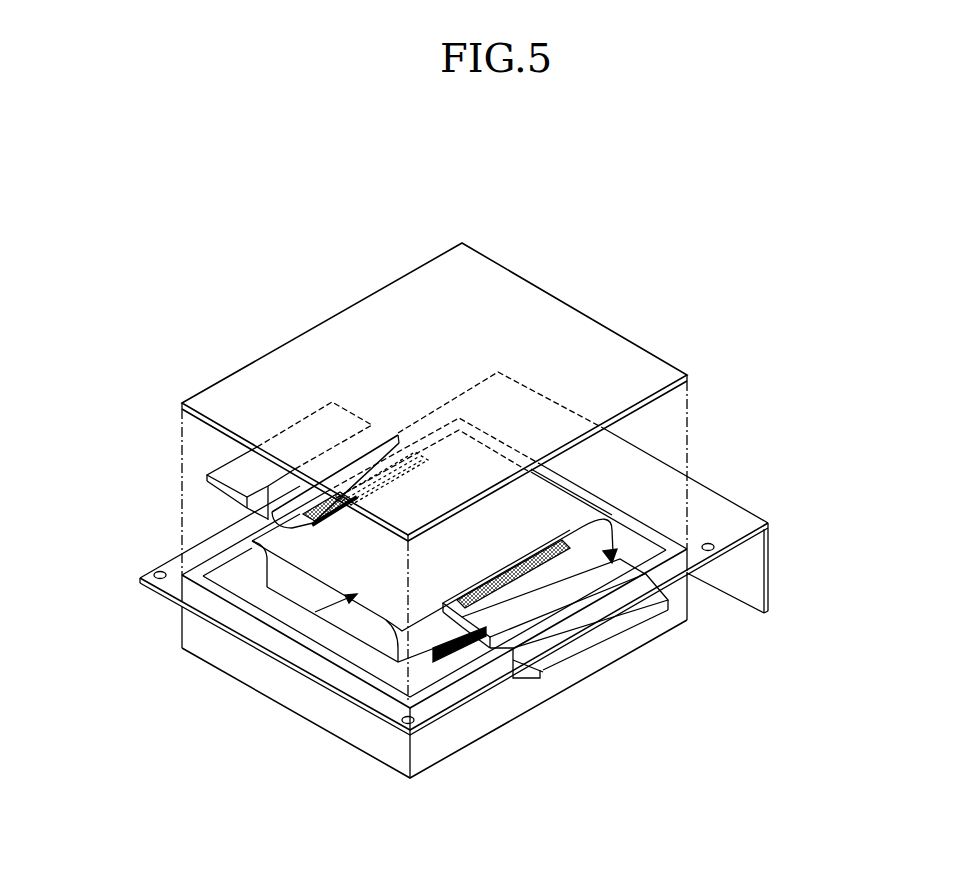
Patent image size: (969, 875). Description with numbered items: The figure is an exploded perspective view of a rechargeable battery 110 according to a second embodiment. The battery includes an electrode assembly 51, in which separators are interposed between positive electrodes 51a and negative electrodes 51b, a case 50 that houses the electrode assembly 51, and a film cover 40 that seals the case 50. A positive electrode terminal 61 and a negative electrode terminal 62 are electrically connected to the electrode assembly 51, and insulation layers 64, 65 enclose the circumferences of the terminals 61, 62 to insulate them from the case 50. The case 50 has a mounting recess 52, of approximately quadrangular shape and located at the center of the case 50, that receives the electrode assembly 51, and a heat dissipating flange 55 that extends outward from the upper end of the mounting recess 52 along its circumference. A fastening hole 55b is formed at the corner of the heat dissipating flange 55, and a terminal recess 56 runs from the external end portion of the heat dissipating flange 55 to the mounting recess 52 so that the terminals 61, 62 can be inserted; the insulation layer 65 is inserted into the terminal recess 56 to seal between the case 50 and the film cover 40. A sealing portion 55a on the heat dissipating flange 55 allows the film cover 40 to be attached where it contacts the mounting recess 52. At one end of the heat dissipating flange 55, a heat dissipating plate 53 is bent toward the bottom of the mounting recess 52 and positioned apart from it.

The rechargeable battery 110 is at (383, 216).
The film cover 40 is at (492, 290).
The case 50 is at (476, 553).
The electrode assembly 51 is at (371, 648).
The positive electrode 51a is at (432, 632).
The negative electrode 51b is at (250, 547).
The mounting recess 52 is at (476, 723).
The heat dissipating plate 53 is at (770, 567).
The heat dissipating flange 55 is at (434, 604).
The sealing portion 55a is at (327, 662).
The fastening hole 55b is at (157, 573).
The terminal recess 56 is at (273, 523).
The positive electrode terminal 61 is at (607, 613).
The negative electrode terminal 62 is at (233, 468).
The insulation layer 64 is at (325, 432).
The insulation layer 65 is at (553, 610).